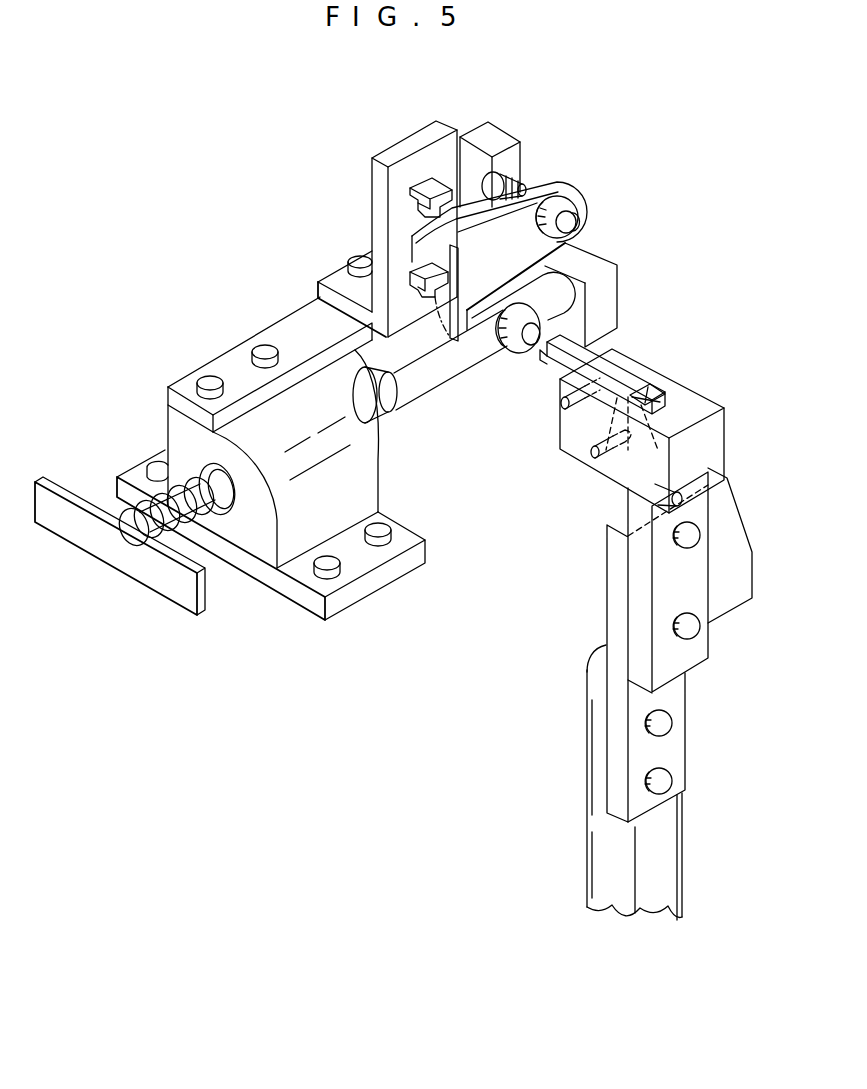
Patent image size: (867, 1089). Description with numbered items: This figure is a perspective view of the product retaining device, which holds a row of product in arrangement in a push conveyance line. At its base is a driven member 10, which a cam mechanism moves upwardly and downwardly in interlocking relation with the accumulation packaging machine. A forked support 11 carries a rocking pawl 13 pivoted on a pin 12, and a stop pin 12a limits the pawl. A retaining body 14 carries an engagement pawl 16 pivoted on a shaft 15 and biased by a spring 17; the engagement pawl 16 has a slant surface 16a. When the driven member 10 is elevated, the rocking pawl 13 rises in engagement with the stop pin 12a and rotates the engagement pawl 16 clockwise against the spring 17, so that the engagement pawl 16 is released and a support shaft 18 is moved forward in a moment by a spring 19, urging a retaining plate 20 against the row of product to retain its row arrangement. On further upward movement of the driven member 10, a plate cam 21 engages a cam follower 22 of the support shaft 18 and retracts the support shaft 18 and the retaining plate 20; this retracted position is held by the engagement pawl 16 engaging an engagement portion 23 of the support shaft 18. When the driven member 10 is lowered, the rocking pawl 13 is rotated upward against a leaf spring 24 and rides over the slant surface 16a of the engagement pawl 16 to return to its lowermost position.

The driven member 10 is at (606, 835).
The forked support 11 is at (700, 390).
The pin 12 is at (593, 458).
The stop pin 12a is at (562, 408).
The rocking pawl 13 is at (440, 333).
The retaining body 14 is at (343, 285).
The shaft 15 is at (574, 218).
The engagement pawl 16 is at (476, 286).
The slant surface 16a is at (415, 246).
The spring 17 is at (523, 188).
The support shaft 18 is at (398, 394).
The spring 19 is at (193, 540).
The retaining plate 20 is at (143, 565).
The plate cam 21 is at (725, 545).
The cam follower 22 is at (592, 296).
The engagement portion 23 is at (493, 348).
The leaf spring 24 is at (650, 398).